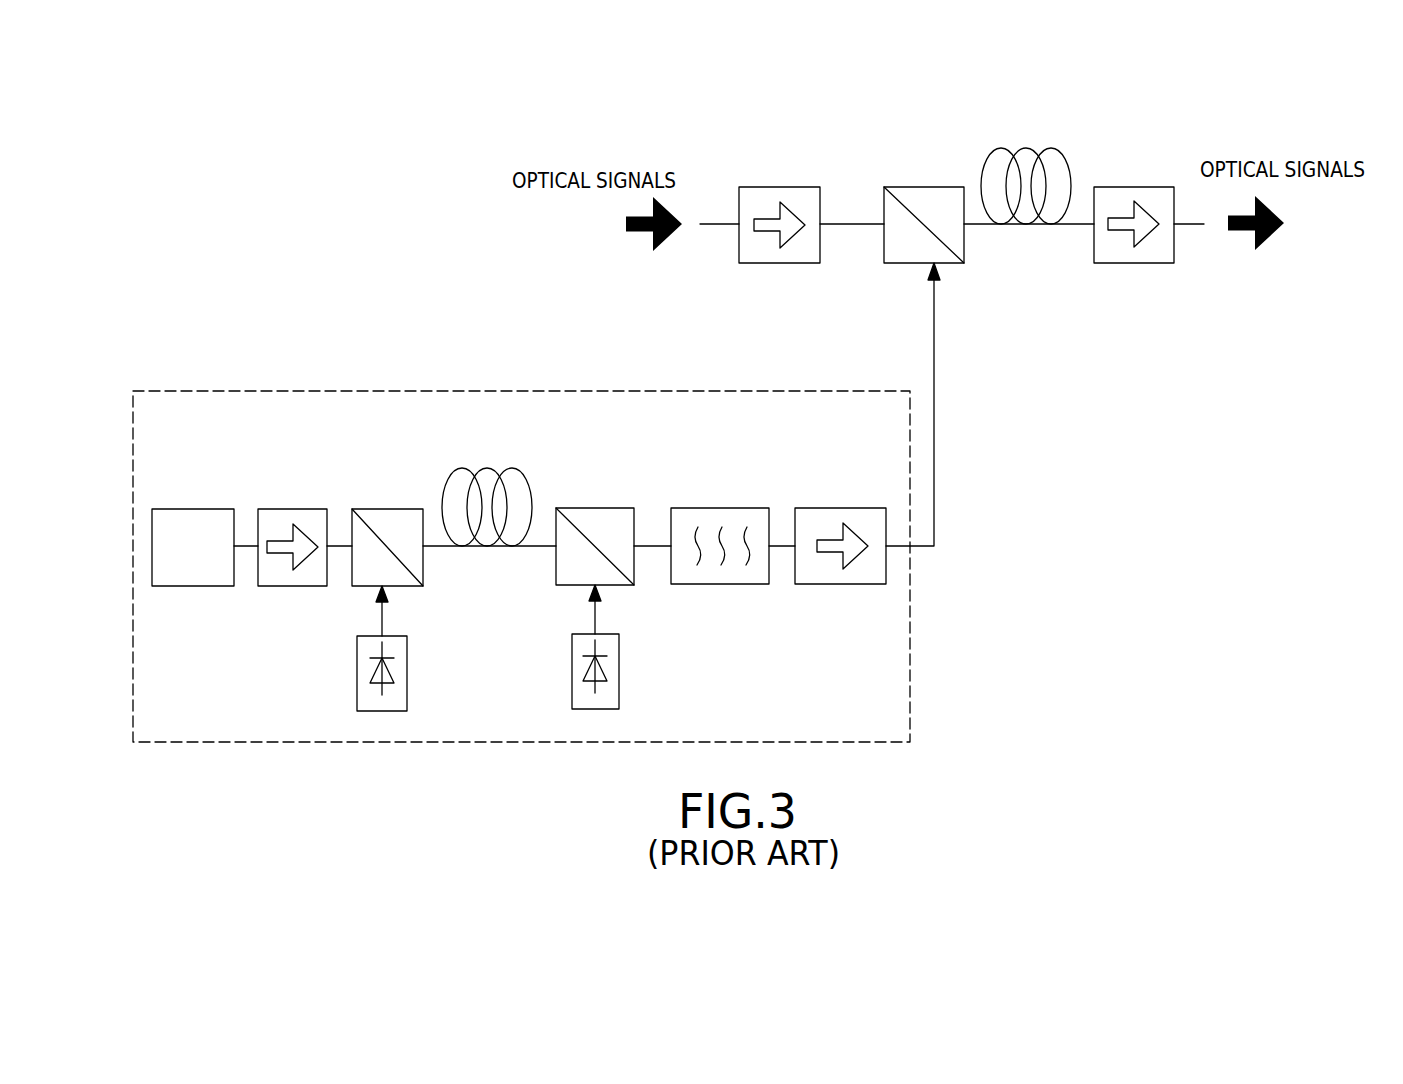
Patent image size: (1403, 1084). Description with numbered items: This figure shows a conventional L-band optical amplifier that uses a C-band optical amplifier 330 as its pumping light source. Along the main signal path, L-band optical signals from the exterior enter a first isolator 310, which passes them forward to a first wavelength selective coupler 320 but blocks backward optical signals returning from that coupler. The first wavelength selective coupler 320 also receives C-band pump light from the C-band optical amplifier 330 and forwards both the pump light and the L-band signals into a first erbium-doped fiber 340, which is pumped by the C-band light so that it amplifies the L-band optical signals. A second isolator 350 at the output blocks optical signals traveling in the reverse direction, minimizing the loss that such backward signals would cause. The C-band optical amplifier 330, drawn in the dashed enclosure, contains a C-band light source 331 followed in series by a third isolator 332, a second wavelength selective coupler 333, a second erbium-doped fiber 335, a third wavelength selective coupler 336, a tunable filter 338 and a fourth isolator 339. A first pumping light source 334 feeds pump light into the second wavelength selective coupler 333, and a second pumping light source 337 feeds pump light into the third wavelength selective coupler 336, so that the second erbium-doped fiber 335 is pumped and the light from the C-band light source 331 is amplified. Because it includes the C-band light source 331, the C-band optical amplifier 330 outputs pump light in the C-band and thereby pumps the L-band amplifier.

The first isolator 310 is at (779, 186).
The first wavelength selective coupler 320 is at (923, 186).
The C-band optical amplifier 330 is at (246, 390).
The C-band light source 331 is at (190, 508).
The third isolator 332 is at (297, 508).
The second wavelength selective coupler 333 is at (380, 508).
The first pumping light source 334 is at (407, 672).
The second erbium-doped fiber 335 is at (512, 468).
The third wavelength selective coupler 336 is at (594, 507).
The second pumping light source 337 is at (619, 670).
The tunable filter 338 is at (724, 507).
The fourth isolator 339 is at (832, 507).
The first erbium-doped fiber 340 is at (1050, 147).
The second isolator 350 is at (1135, 186).